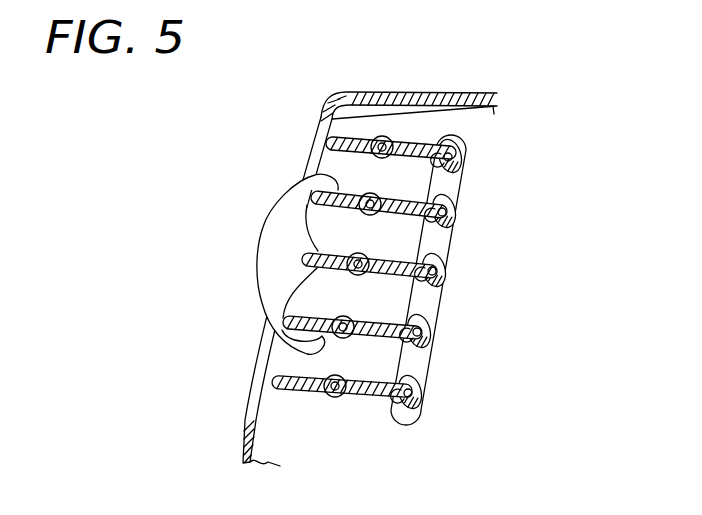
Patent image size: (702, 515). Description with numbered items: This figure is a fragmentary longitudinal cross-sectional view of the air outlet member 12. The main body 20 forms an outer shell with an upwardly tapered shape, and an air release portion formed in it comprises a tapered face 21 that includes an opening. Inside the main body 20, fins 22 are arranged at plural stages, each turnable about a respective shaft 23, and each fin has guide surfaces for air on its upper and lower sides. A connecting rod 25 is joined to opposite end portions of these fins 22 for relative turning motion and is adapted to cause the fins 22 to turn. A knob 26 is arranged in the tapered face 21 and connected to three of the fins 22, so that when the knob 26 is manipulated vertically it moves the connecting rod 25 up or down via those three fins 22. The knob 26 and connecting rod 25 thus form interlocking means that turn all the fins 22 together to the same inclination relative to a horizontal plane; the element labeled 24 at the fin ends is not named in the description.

The air outlet member 12 is at (485, 92).
The main body 20 is at (385, 92).
The tapered face 21 is at (305, 167).
The fins 22 is at (417, 145).
The shafts 23 is at (382, 146).
The end clip 24 is at (467, 163).
The connecting rod 25 is at (452, 248).
The knob 26 is at (257, 293).